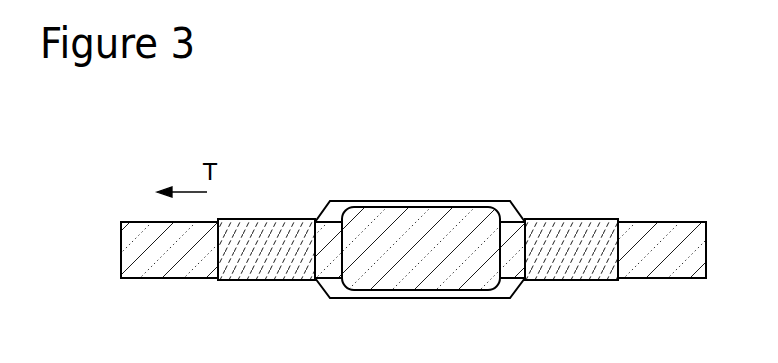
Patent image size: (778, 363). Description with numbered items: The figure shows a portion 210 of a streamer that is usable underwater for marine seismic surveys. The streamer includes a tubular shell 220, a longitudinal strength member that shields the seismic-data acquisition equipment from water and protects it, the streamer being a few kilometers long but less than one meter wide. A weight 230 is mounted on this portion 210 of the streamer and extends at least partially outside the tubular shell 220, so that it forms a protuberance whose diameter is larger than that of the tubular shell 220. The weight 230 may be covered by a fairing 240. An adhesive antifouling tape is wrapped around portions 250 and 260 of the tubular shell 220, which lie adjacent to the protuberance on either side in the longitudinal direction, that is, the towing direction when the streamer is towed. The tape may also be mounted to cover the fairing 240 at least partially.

The portion of a streamer 210 is at (444, 166).
The tubular shell 220 is at (168, 270).
The weight 230 is at (457, 290).
The fairing 240 is at (507, 203).
The portion of the tubular shell 250 is at (270, 270).
The portion of the tubular shell 260 is at (578, 272).